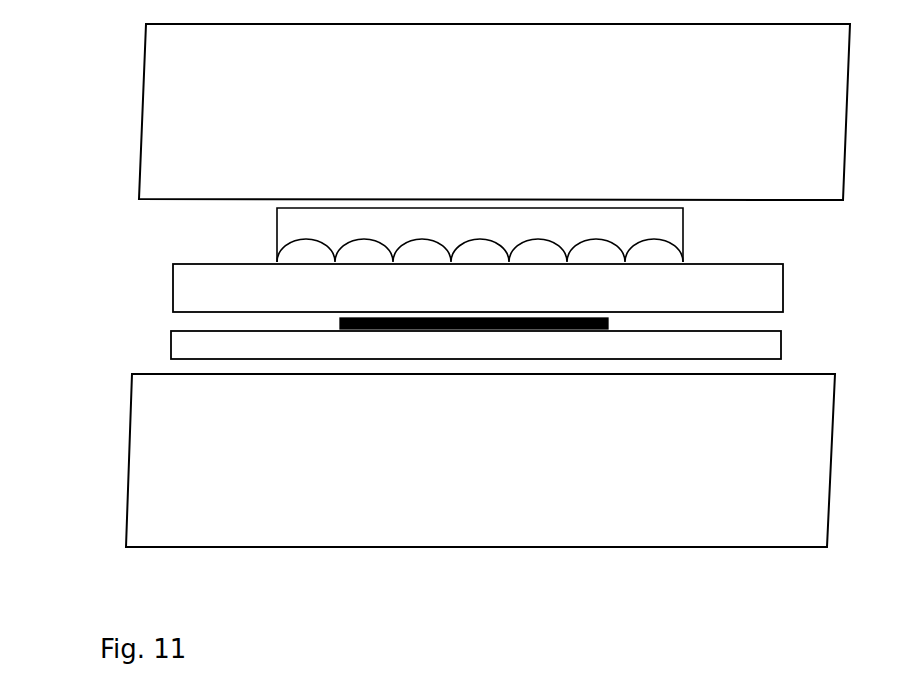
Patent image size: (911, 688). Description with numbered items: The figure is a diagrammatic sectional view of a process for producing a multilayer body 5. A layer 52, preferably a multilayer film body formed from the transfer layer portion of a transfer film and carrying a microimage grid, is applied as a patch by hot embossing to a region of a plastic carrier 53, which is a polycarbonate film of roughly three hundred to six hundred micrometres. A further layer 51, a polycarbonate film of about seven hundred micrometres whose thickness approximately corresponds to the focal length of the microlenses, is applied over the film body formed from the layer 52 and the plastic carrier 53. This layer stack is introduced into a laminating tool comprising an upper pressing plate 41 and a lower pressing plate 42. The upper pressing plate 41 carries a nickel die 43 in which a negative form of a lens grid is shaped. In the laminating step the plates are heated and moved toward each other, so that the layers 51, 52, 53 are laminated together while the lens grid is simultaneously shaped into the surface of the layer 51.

The upper pressing plate 41 is at (155, 74).
The lower pressing plate 42 is at (287, 537).
The nickel die 43 is at (283, 235).
The multilayer body 5 is at (444, 313).
The layer 51 is at (180, 290).
The layer 52 is at (318, 323).
The plastic carrier 53 is at (175, 347).